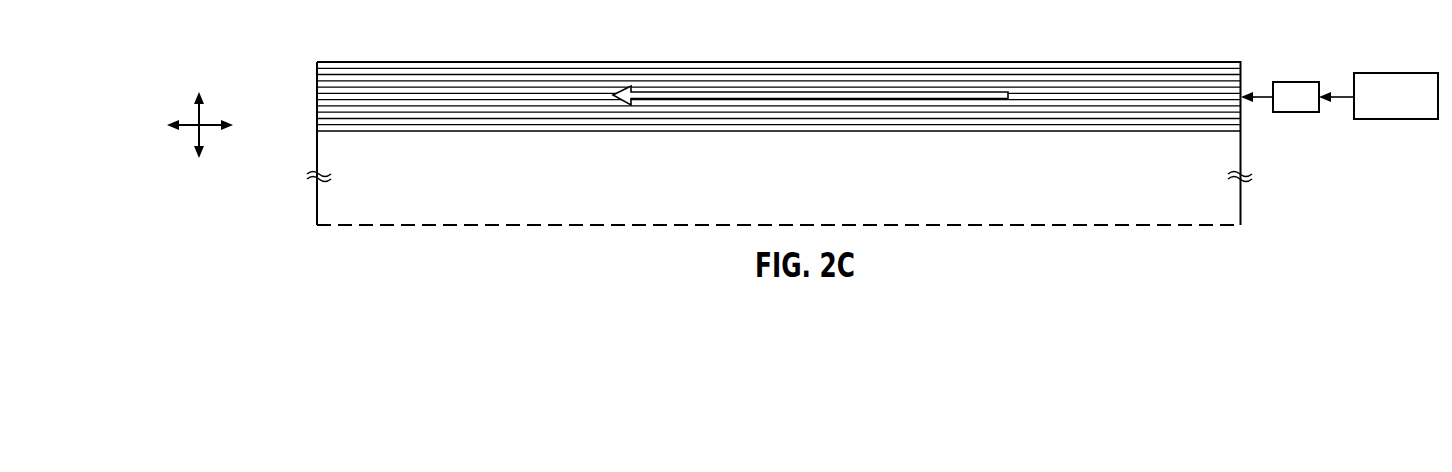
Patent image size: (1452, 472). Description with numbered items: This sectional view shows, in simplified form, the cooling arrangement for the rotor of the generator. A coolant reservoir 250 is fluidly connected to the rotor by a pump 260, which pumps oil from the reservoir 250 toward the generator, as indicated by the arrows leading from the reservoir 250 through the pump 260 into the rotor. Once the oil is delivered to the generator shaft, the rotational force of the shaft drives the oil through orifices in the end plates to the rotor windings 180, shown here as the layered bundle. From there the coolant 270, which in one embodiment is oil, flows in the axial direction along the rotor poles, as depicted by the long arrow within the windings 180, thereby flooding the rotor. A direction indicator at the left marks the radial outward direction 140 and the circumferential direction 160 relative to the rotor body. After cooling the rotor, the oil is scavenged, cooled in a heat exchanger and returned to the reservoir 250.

The radial outward direction 140 is at (196, 109).
The circumferential direction 160 is at (187, 127).
The rotor windings 180 is at (895, 82).
The coolant 270 is at (974, 94).
The pump 260 is at (1298, 82).
The coolant reservoir 250 is at (1387, 73).